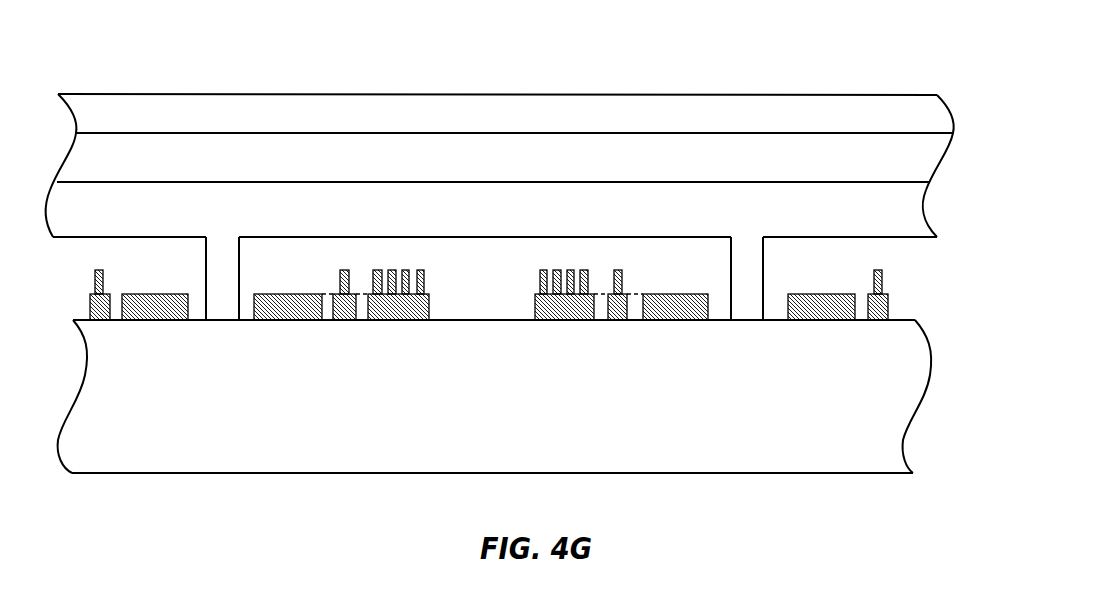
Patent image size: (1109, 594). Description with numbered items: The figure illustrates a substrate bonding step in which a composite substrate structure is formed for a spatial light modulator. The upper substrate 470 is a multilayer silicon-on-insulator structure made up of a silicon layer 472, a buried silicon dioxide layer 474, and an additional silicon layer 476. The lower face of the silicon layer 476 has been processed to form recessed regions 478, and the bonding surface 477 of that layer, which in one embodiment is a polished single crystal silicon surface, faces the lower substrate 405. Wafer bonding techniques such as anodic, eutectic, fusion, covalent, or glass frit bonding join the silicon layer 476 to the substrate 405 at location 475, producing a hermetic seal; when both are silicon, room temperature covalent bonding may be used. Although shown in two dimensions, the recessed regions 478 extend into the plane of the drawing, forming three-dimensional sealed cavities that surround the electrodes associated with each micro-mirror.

The substrate 470 is at (720, 64).
The silicon layer 472 is at (876, 124).
The silicon dioxide layer 474 is at (876, 167).
The silicon layer 476 is at (876, 221).
The bonding surface 477 is at (627, 238).
The recessed regions 478 is at (501, 267).
The location 475 is at (220, 326).
The substrate 405 is at (870, 452).